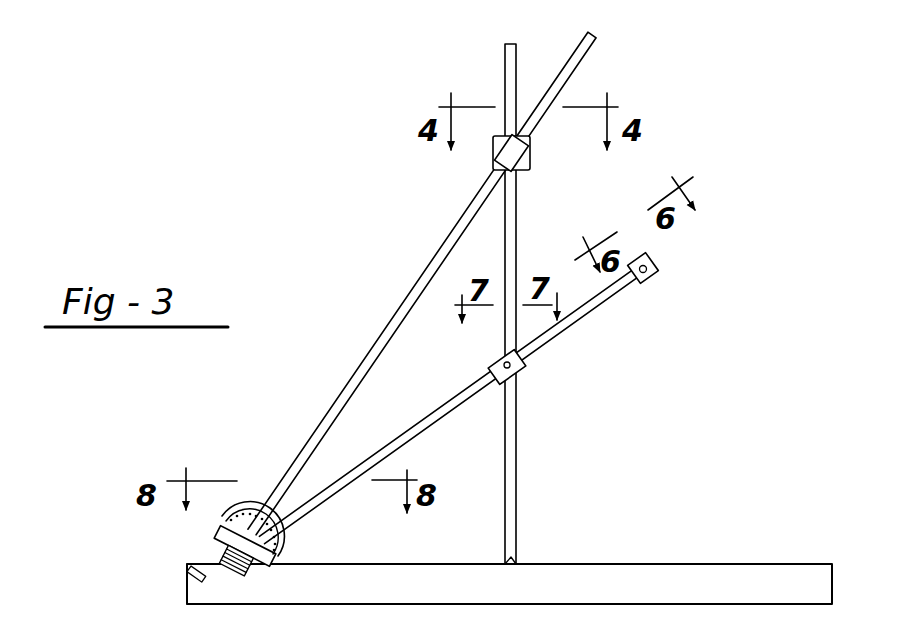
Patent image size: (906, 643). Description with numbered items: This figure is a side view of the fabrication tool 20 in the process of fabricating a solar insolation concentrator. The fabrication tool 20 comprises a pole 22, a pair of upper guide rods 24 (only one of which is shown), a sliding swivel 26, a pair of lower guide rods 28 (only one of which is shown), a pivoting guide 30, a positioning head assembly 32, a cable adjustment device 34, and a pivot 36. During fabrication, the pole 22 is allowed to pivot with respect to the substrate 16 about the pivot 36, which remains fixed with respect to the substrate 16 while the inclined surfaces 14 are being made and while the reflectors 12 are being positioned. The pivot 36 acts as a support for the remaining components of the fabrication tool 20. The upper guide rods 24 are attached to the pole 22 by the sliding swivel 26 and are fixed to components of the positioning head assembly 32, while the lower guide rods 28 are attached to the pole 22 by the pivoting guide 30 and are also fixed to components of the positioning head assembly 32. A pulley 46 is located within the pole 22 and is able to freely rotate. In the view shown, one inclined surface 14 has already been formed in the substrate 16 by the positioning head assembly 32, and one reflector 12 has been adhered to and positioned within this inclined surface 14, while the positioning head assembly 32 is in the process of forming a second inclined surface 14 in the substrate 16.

The reflector 12 is at (193, 566).
The inclined surface 14 is at (195, 578).
The substrate 16 is at (657, 580).
The fabrication tool 20 is at (606, 395).
The pole 22 is at (510, 248).
The upper guide rods 24 is at (390, 330).
The sliding swivel 26 is at (518, 158).
The lower guide rods 28 is at (432, 423).
The pivoting guide 30 is at (516, 372).
The positioning head assembly 32 is at (250, 520).
The cable adjustment device 34 is at (655, 265).
The pivot 36 is at (513, 563).
The pulley 46 is at (436, 636).